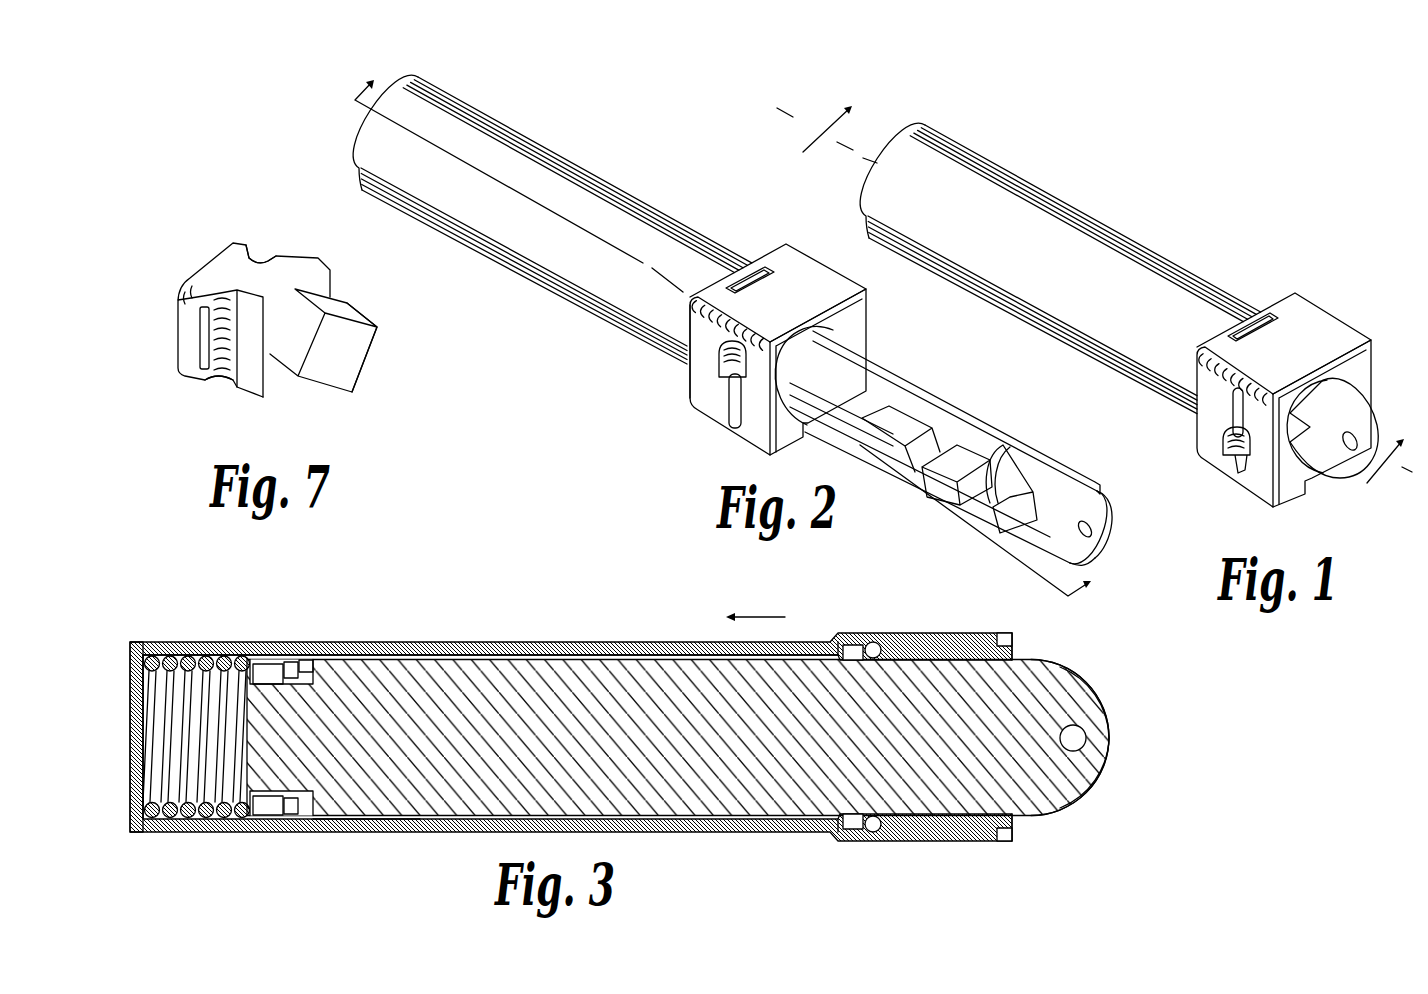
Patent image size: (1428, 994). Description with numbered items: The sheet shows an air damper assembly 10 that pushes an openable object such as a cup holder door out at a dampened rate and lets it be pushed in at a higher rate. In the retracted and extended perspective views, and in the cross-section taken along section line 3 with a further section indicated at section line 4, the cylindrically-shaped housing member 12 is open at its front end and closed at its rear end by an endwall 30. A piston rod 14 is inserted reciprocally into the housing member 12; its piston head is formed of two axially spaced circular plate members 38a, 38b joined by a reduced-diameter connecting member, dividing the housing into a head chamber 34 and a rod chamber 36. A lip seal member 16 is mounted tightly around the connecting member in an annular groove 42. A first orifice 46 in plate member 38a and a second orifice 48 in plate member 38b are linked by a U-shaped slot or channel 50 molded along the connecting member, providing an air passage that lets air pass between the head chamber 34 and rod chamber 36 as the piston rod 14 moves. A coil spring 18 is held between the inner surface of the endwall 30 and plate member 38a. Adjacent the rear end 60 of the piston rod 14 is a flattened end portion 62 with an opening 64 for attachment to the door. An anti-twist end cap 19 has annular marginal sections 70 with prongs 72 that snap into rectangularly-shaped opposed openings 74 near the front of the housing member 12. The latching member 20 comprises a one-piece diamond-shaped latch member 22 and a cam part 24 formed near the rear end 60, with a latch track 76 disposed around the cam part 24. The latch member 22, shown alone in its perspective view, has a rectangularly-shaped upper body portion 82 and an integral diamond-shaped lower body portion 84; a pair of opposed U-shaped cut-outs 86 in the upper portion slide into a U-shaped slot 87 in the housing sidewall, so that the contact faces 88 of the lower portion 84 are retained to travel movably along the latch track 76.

In FIG. 1, the section line 3— 3 is at (1094, 307).
In FIG. 2, the section line 4— 4 is at (713, 341).
In FIG. 3, the air damper assembly 10 is at (621, 614).
In FIG. 2, the air damper assembly 10 is at (660, 167).
In FIG. 1, the air damper assembly 10 is at (1165, 184).
In FIG. 3, the cylindrically-shaped housing member 12 is at (578, 641).
In FIG. 2, the cylindrically-shaped housing member 12 is at (532, 138).
In FIG. 1, the cylindrically-shaped housing member 12 is at (1023, 170).
In FIG. 3, the piston rod 14 is at (1080, 682).
In FIG. 2, the piston rod 14 is at (933, 388).
In FIG. 1, the piston rod 14 is at (1334, 456).
In FIG. 3, the lip seal member 16 is at (267, 832).
In FIG. 3, the coil spring 18 is at (149, 742).
In FIG. 3, the anti-twist end cap 19 is at (1013, 657).
In FIG. 2, the anti-twist end cap 19 is at (860, 318).
In FIG. 1, the anti-twist end cap 19 is at (1330, 320).
In FIG. 2, the latching member 20 is at (706, 372).
In FIG. 7, the one-piece diamond-shaped latch member 22 is at (200, 217).
In FIG. 2, the cam part 24 is at (947, 493).
In FIG. 3, the endwall 30 is at (133, 727).
In FIG. 3, the head chamber 34 is at (200, 650).
In FIG. 3, the rod chamber 36 is at (437, 641).
In FIG. 3, the circular plate member 38a is at (247, 829).
In FIG. 3, the circular plate member 38b is at (293, 831).
In FIG. 3, the annular groove 42 is at (340, 831).
In FIG. 3, the first orifice 46 is at (262, 660).
In FIG. 3, the second orifice 48 is at (291, 659).
In FIG. 3, the U-shaped slot or channel 50 is at (277, 660).
In FIG. 3, the rear end of piston rod 60 is at (1099, 796).
In FIG. 2, the rear end of piston rod 60 is at (1017, 561).
In FIG. 2, the flattened end portion 62 is at (1083, 556).
In FIG. 3, the opening 64 is at (1078, 737).
In FIG. 2, the opening 64 is at (1092, 523).
In FIG. 1, the opening 64 is at (1350, 440).
In FIG. 3, the annular marginal sections 70 is at (942, 633).
In FIG. 3, the prong or projection 72 is at (873, 634).
In FIG. 3, the rectangularly-shaped opposed openings 74 is at (860, 634).
In FIG. 2, the latch track 76 is at (943, 423).
In FIG. 2, the rectangularly-shaped upper body portion 82 is at (717, 357).
In FIG. 1, the rectangularly-shaped upper body portion 82 is at (1235, 452).
In FIG. 7, the rectangularly-shaped upper body portion 82 is at (200, 277).
In FIG. 7, the diamond-shaped lower body portion 84 is at (323, 399).
In FIG. 7, the U-shaped cut-outs 86 is at (287, 244).
In FIG. 2, the U-shaped slot 87 is at (733, 420).
In FIG. 7, the contact faces 88 is at (367, 313).